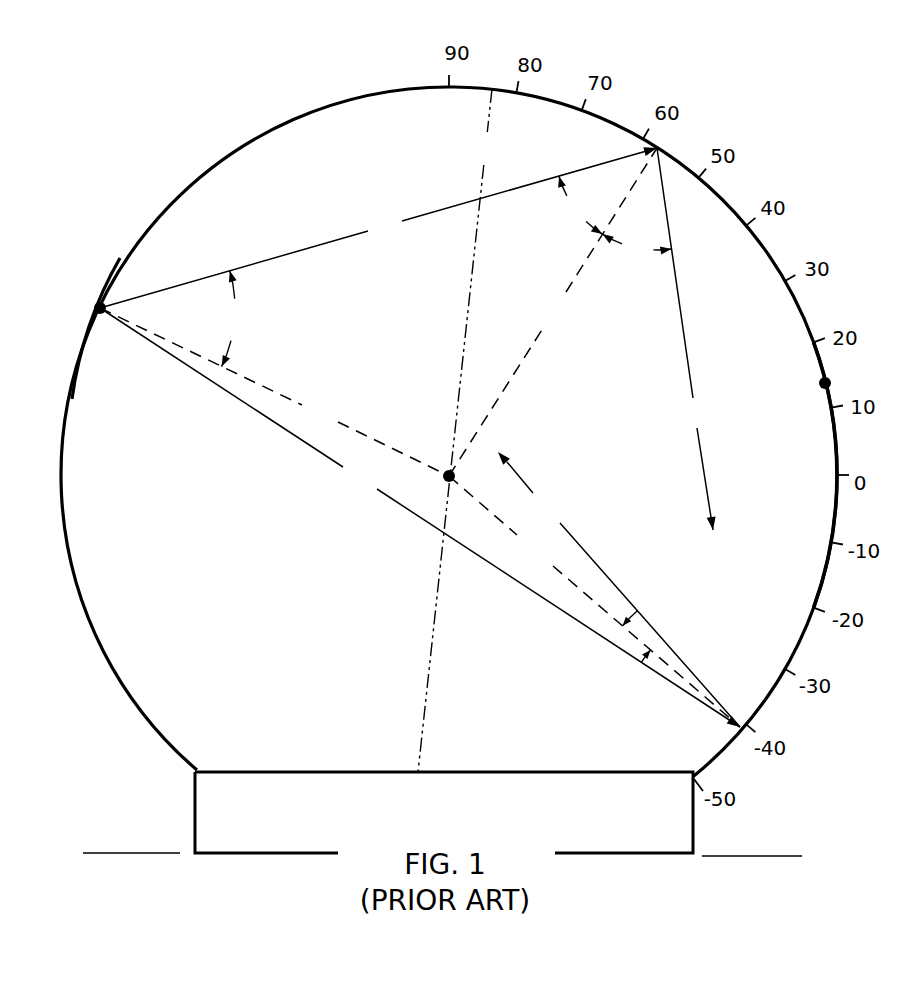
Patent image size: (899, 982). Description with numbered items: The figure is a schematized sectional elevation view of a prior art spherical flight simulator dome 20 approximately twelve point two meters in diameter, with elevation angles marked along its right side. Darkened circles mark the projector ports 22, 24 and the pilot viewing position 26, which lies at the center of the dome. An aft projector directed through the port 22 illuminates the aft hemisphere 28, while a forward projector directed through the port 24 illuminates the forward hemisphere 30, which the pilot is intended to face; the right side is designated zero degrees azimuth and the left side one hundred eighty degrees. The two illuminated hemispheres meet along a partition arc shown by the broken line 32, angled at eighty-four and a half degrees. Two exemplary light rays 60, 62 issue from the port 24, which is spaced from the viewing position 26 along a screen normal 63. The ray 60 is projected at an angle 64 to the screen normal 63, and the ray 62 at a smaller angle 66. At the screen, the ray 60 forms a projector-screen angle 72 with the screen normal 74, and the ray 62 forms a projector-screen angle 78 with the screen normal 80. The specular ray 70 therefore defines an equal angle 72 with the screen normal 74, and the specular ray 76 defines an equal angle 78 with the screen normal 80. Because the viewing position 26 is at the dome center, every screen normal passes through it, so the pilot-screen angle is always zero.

The spherical simulator dome 20 is at (183, 144).
The projector port 22 is at (825, 383).
The projector port 24 is at (100, 307).
The pilot viewing position 26 is at (449, 476).
The aft hemisphere 28 is at (76, 427).
The forward hemisphere 30 is at (823, 517).
The broken line 32 is at (458, 430).
The light ray 60 is at (378, 227).
The light ray 62 is at (420, 517).
The screen normal 63 is at (274, 392).
The angle 64 is at (236, 319).
The angle 66 is at (205, 389).
The specular ray 70 is at (686, 339).
The projector-screen angle 72 is at (614, 221).
The screen normal 74 is at (553, 312).
The specular ray 76 is at (619, 589).
The projector-screen angle 78 is at (675, 638).
The screen normal 80 is at (594, 601).